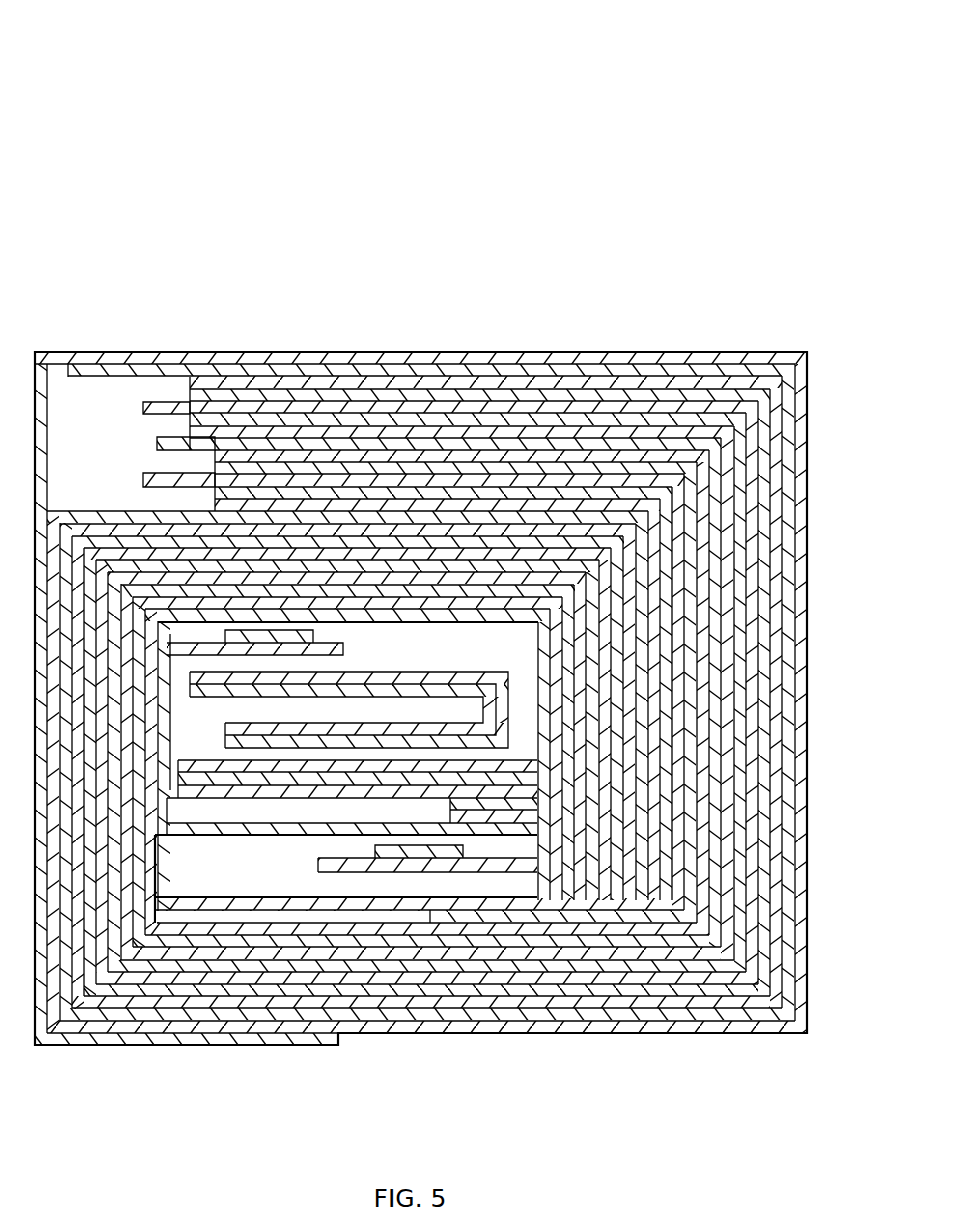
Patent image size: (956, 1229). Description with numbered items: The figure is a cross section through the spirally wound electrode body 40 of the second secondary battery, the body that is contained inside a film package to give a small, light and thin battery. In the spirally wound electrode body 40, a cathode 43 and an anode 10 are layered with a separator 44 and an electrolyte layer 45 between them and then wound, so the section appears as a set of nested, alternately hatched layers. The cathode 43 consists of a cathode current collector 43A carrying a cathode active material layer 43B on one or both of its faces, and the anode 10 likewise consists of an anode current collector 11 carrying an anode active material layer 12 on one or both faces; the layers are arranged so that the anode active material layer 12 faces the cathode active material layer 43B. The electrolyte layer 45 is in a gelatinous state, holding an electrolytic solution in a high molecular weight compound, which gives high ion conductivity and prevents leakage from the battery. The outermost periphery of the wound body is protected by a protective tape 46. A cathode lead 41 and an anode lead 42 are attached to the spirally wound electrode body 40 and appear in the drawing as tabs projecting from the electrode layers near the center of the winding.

The spirally wound electrode body 40 is at (428, 564).
The anode 10 is at (421, 612).
The anode current collector 11 is at (362, 372).
The anode active material layer 12 is at (487, 497).
The cathode 43 is at (171, 335).
The cathode current collector 43A is at (175, 410).
The cathode active material layer 43B is at (248, 447).
The separator 44 is at (590, 410).
The electrolyte layer 45 is at (652, 487).
The protective tape 46 is at (760, 358).
The cathode lead 41 is at (247, 640).
The anode lead 42 is at (415, 850).